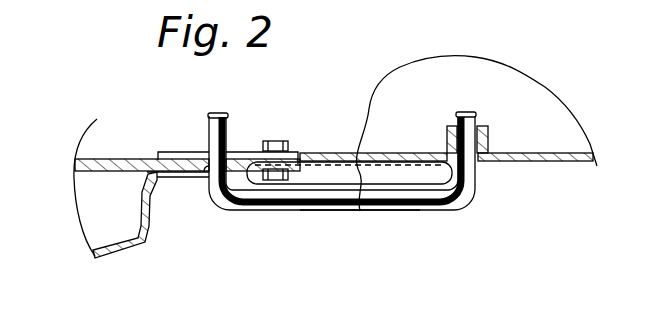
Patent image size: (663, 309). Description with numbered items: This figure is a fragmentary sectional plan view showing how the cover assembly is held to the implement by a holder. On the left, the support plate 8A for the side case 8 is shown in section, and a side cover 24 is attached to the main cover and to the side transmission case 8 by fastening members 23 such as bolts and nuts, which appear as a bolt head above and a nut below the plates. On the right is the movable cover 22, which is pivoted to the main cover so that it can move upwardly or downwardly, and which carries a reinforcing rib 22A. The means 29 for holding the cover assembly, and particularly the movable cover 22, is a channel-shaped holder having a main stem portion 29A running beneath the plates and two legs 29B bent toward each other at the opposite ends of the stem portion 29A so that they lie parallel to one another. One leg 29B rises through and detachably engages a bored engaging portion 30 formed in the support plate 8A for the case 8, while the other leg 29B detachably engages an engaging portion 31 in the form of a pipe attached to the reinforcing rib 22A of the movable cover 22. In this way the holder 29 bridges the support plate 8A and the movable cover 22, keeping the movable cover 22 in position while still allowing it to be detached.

The side case 8 is at (120, 244).
The support plate 8A is at (130, 156).
The movable cover 22 is at (576, 121).
The reinforcing rib 22A is at (543, 159).
The fastening members 23 is at (286, 139).
The side covers 24 is at (360, 138).
The means for holding the cover assembly 29 is at (433, 211).
The main stem portion 29A is at (358, 208).
The legs 29B is at (231, 133).
The bored engaging portion 30 is at (207, 175).
The engaging portion 31 is at (488, 141).